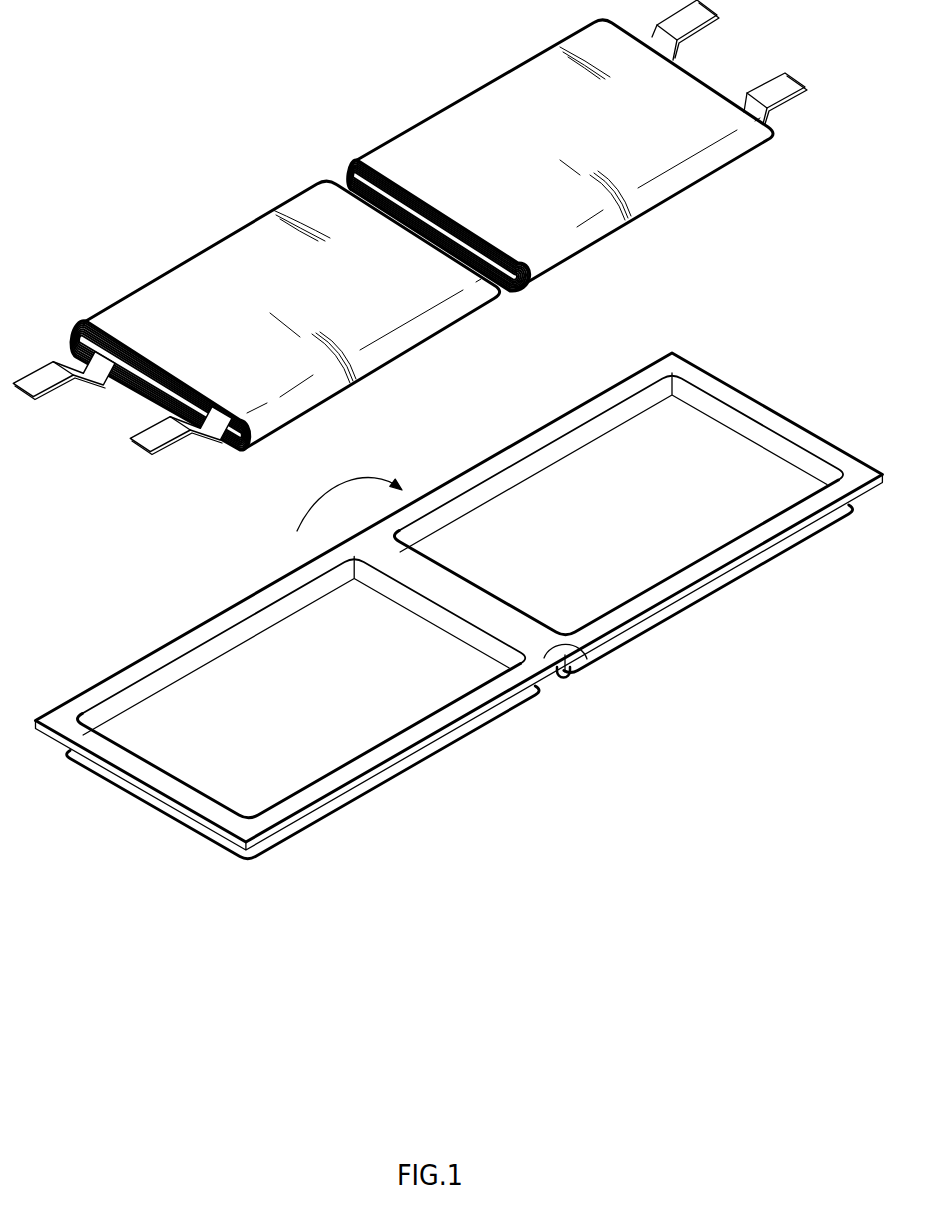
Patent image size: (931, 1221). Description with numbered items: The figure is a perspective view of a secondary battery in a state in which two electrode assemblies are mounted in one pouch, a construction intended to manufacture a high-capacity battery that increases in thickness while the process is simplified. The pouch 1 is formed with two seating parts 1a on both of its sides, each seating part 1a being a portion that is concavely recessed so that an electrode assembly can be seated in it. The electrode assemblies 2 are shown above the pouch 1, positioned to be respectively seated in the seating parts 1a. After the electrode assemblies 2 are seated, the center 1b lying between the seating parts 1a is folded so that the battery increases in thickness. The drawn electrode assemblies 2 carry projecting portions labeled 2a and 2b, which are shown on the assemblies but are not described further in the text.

The pouch 1 is at (805, 384).
The seating part 1a is at (648, 532).
The center of the seating parts 1b is at (587, 657).
The electrode assembly 2 is at (82, 506).
The positive electrode tab 2a is at (30, 386).
The negative electrode tab 2b is at (147, 440).